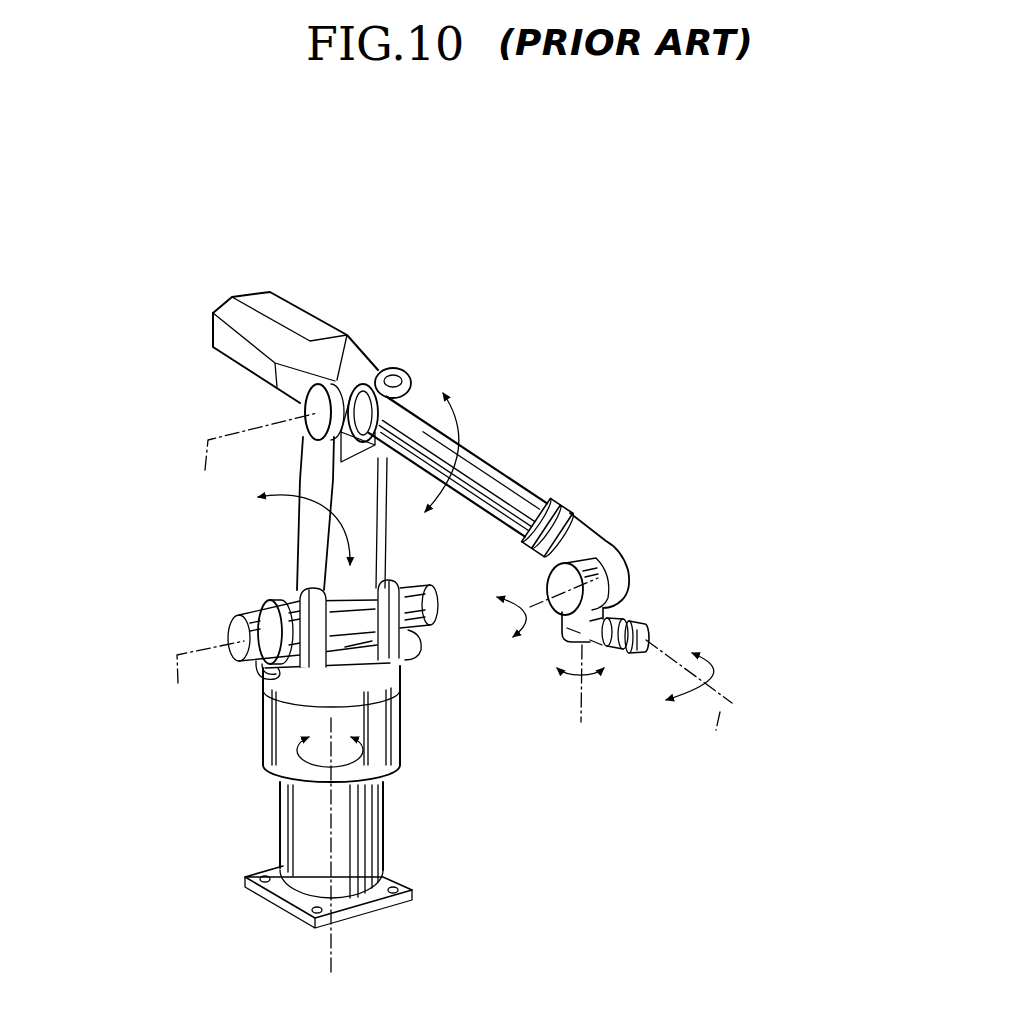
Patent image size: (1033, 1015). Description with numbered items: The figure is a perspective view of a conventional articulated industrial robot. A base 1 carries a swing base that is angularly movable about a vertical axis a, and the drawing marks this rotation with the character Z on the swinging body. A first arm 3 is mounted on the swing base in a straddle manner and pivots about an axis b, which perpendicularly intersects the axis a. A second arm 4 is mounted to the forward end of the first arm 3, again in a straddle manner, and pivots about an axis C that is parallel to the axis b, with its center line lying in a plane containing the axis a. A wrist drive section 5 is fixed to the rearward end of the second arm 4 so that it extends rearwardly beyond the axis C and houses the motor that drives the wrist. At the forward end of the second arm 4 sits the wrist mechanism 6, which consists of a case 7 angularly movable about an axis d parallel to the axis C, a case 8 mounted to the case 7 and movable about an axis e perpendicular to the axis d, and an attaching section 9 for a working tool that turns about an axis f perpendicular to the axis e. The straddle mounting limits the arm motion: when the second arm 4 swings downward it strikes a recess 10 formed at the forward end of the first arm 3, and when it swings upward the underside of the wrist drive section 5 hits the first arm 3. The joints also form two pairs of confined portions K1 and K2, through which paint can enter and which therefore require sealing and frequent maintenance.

The base 1 is at (387, 877).
The rotating base drum Z is at (293, 690).
The axis a is at (330, 957).
The axis b is at (204, 673).
The axis c C is at (251, 451).
The first arm 3 is at (306, 527).
The wrist drive section 5 is at (303, 294).
The confined portions K1 is at (383, 367).
The confined portions K2 is at (402, 505).
The recess 10 is at (399, 434).
The second arm 4 is at (507, 490).
The wrist mechanism 6 is at (618, 531).
The case 7 is at (551, 580).
The case 8 is at (575, 632).
The attaching section 9 is at (645, 638).
The axis d is at (535, 635).
The axis e is at (580, 697).
The axis f is at (689, 698).